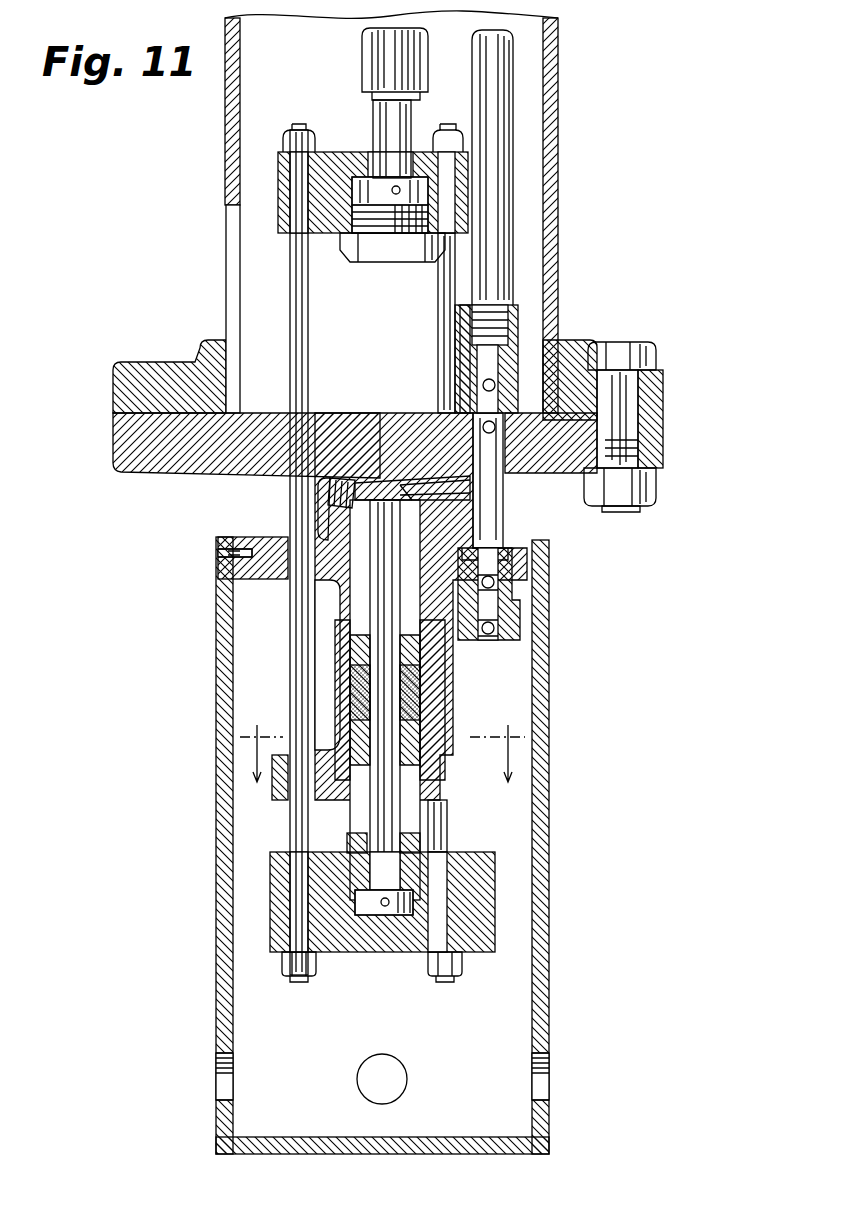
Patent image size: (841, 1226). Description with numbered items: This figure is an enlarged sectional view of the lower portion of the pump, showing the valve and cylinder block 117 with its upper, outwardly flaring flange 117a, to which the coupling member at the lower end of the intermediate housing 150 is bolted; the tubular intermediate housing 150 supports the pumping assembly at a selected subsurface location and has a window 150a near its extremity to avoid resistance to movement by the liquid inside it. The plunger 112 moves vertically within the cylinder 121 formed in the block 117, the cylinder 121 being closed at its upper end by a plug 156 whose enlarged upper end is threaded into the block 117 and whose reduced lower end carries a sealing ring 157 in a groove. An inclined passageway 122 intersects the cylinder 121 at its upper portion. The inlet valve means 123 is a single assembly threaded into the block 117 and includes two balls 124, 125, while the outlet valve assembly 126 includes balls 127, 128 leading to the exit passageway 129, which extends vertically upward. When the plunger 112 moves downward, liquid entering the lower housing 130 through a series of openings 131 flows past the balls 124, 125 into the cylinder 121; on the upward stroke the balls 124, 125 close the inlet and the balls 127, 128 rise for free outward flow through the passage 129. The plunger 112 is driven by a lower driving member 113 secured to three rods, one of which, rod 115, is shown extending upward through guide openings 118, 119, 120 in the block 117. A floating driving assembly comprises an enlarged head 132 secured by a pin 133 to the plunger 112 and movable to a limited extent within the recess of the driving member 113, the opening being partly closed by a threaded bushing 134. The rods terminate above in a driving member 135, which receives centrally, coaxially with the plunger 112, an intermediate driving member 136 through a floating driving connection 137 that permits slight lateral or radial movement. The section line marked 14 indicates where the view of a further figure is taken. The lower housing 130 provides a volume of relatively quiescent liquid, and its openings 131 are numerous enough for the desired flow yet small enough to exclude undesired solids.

The intermediate housing 150 is at (228, 122).
The window 150a is at (232, 246).
The driving member 135 is at (345, 152).
The intermediate driving member 136 is at (422, 70).
The floating driving connection 137 is at (384, 242).
The exit passageway 129 is at (512, 118).
The sealing ring 157 is at (396, 437).
The plug 156 is at (378, 432).
The ball 128 is at (486, 380).
The outlet valve assembly 126 is at (460, 396).
The ball 127 is at (493, 432).
The flange 117a is at (662, 455).
The guide opening 120 is at (290, 478).
The cylinder 121 is at (372, 500).
The inclined passageway 122 is at (452, 496).
The ball 125 is at (506, 578).
The inlet valve means 123 is at (516, 600).
The ball 124 is at (492, 630).
The guide opening 119 is at (288, 580).
The rod 115 is at (296, 658).
The valve and cylinder block 117 is at (432, 668).
The plunger 112 is at (394, 740).
The guide opening 118 is at (282, 802).
The threaded bushing 134 is at (448, 838).
The lower driving member 113 is at (497, 906).
The enlarged head 132 is at (374, 912).
The pin 133 is at (388, 910).
The lower housing 130 is at (550, 972).
The opening 131 is at (365, 1070).
The section line 14 is at (382, 765).